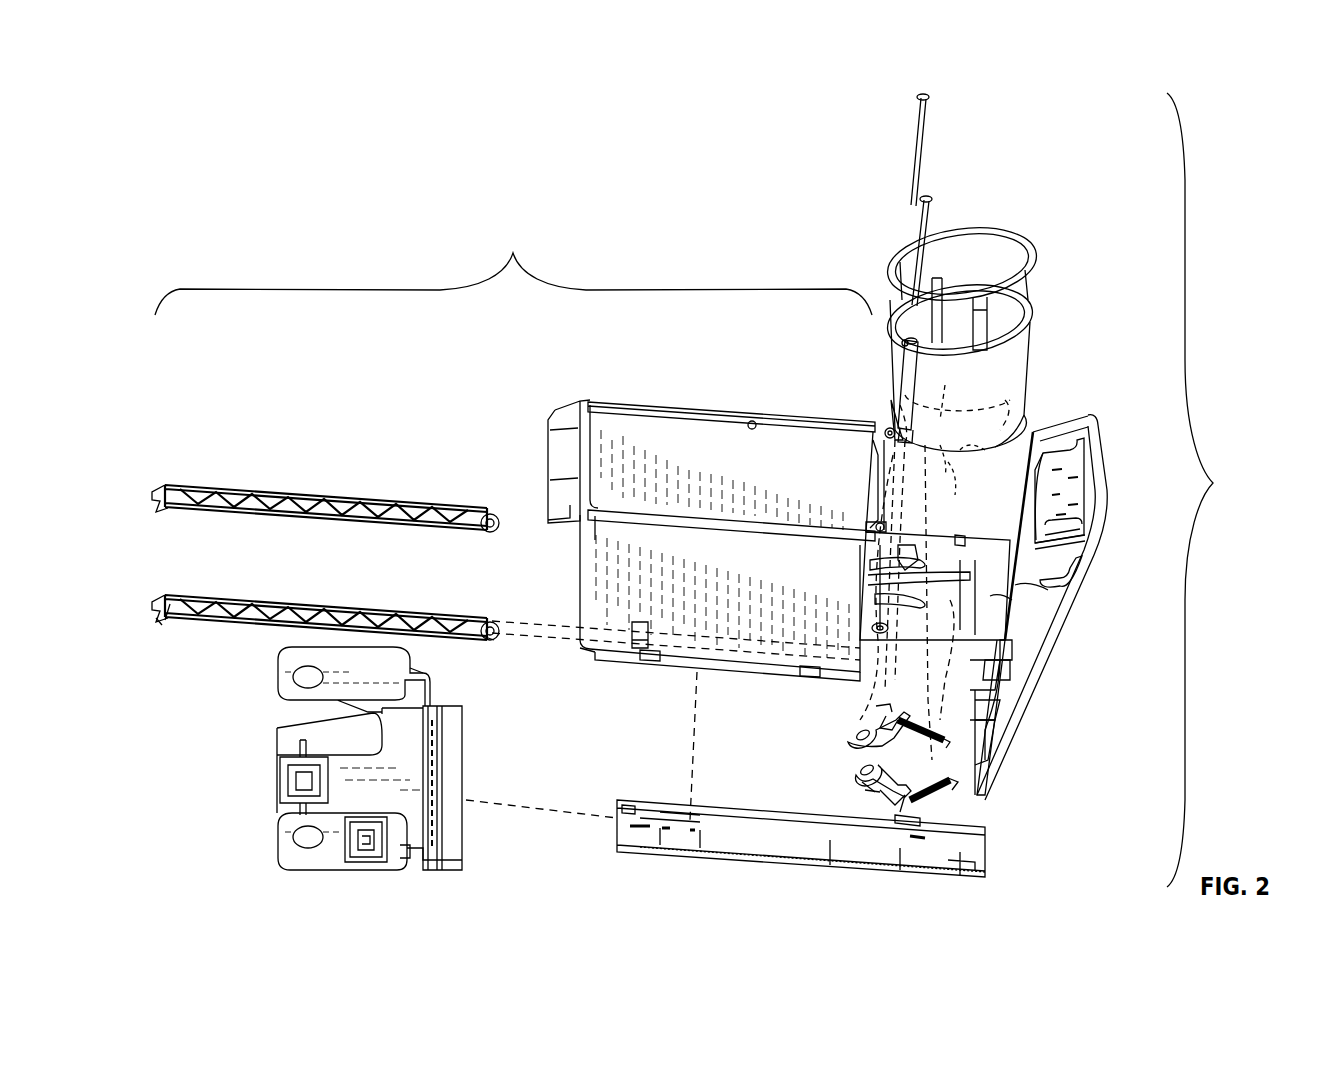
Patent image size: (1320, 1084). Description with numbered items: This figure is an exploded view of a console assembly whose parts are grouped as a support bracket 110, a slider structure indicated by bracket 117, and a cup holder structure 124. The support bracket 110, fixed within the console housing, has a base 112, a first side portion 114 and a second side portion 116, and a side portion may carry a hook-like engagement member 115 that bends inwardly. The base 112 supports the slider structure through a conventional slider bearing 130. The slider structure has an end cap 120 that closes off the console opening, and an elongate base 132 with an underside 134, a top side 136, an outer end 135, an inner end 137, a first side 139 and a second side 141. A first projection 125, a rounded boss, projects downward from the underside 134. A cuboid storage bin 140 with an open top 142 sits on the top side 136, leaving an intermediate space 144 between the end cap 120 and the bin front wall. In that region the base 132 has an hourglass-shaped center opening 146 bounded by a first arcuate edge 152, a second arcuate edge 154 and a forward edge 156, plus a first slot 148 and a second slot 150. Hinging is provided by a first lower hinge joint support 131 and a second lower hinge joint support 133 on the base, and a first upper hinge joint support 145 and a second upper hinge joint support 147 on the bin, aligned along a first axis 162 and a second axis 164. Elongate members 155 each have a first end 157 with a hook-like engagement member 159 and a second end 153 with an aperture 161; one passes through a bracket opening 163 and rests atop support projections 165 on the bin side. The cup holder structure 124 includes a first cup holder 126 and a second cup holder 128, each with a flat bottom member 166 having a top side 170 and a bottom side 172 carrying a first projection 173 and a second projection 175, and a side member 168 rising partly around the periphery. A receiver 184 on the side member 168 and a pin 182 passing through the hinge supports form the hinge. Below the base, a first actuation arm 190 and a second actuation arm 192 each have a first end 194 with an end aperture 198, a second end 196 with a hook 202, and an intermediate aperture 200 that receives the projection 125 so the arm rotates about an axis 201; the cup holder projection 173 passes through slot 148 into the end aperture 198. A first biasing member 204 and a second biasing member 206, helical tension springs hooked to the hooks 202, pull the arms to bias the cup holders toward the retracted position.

The support bracket 110 is at (468, 872).
The base 112 is at (290, 850).
The first side portion 114 is at (332, 852).
The engagement member 115 is at (430, 680).
The second side portion 116 is at (285, 690).
The drawer assembly 117 is at (513, 271).
The end cap 120 is at (1098, 520).
The cup holder structure 124 is at (1213, 490).
The first projection 125 is at (890, 665).
The first cup holder 126 is at (1030, 370).
The second cup holder 128 is at (985, 300).
The slider bearing 130 is at (740, 828).
The first lower hinge joint support 131 is at (878, 625).
The base 132 is at (905, 545).
The second lower hinge joint support 133 is at (872, 520).
The underside 134 is at (995, 730).
The outer end 135 is at (1020, 590).
The top side 136 is at (1022, 575).
The inner end 137 is at (583, 590).
The first side 139 is at (1002, 700).
The storage bin 140 is at (647, 460).
The second side 141 is at (949, 464).
The open top 142 is at (752, 422).
The intermediate space 144 is at (1020, 437).
The first upper hinge joint support 145 is at (880, 490).
The center opening 146 is at (925, 565).
The second upper hinge joint support 147 is at (890, 430).
The first slot 148 is at (900, 598).
The second slot 150 is at (905, 560).
The first arcuate edge 152 is at (1000, 672).
The second end 153 is at (178, 596).
The second arcuate edge 154 is at (1010, 655).
The elongate member 155 is at (302, 488).
The forward edge 156 is at (1000, 600).
The first end 157 is at (492, 642).
The engagement member 159 is at (162, 622).
The aperture 161 is at (488, 624).
The first axis 162 is at (878, 452).
The bracket opening 163 is at (635, 645).
The second axis 164 is at (912, 210).
The support projection 165 is at (638, 662).
The bottom member 166 is at (952, 349).
The side member 168 is at (1012, 355).
The top side 170 is at (968, 245).
The bottom side 172 is at (988, 465).
The first projection 173 is at (895, 410).
The second projection 175 is at (977, 486).
The pin 182 is at (928, 215).
The receiver 184 is at (902, 355).
The first actuation arm 190 is at (870, 795).
The second actuation arm 192 is at (852, 740).
The first end 194 is at (868, 790).
The second end 196 is at (905, 835).
The end aperture 198 is at (862, 790).
The intermediate aperture 200 is at (918, 825).
The axis 201 is at (880, 708).
The hook 202 is at (915, 795).
The first biasing member 204 is at (955, 790).
The second biasing member 206 is at (902, 715).